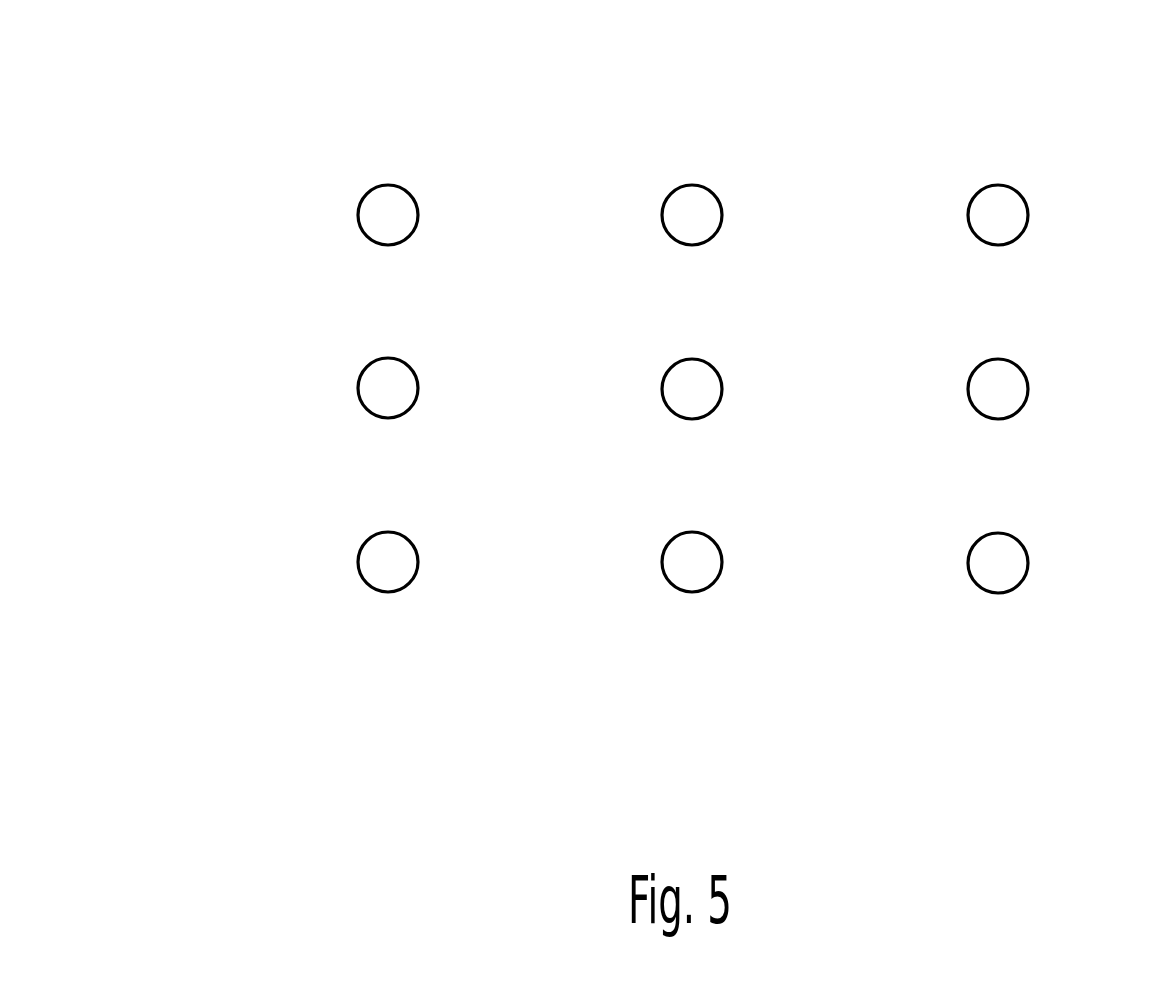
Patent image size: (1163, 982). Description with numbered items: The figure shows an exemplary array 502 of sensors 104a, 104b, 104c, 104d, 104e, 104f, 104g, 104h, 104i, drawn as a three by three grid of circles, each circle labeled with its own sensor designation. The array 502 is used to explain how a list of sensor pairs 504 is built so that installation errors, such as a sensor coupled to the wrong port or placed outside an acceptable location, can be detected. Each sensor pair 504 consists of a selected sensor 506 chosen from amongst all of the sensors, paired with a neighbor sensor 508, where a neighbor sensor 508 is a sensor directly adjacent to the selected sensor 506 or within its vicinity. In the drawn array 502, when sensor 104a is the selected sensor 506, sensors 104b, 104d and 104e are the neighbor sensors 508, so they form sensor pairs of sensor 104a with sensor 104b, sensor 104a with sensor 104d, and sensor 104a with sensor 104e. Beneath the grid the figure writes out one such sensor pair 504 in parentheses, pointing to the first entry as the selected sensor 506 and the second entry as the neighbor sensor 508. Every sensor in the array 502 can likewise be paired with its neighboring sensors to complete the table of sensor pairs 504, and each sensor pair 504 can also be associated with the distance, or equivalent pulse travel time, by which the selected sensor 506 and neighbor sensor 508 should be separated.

The array 502 is at (1078, 110).
The sensor 104a is at (358, 559).
The sensor 104b is at (358, 385).
The sensor 104c is at (358, 212).
The sensor 104d is at (662, 557).
The sensor 104e is at (662, 385).
The sensor 104f is at (662, 212).
The sensor 104g is at (968, 559).
The sensor 104h is at (968, 385).
The sensor 104i is at (968, 212).
The sensor pair 504 is at (525, 725).
The selected sensor 506 is at (383, 748).
The neighbor sensor 508 is at (477, 748).